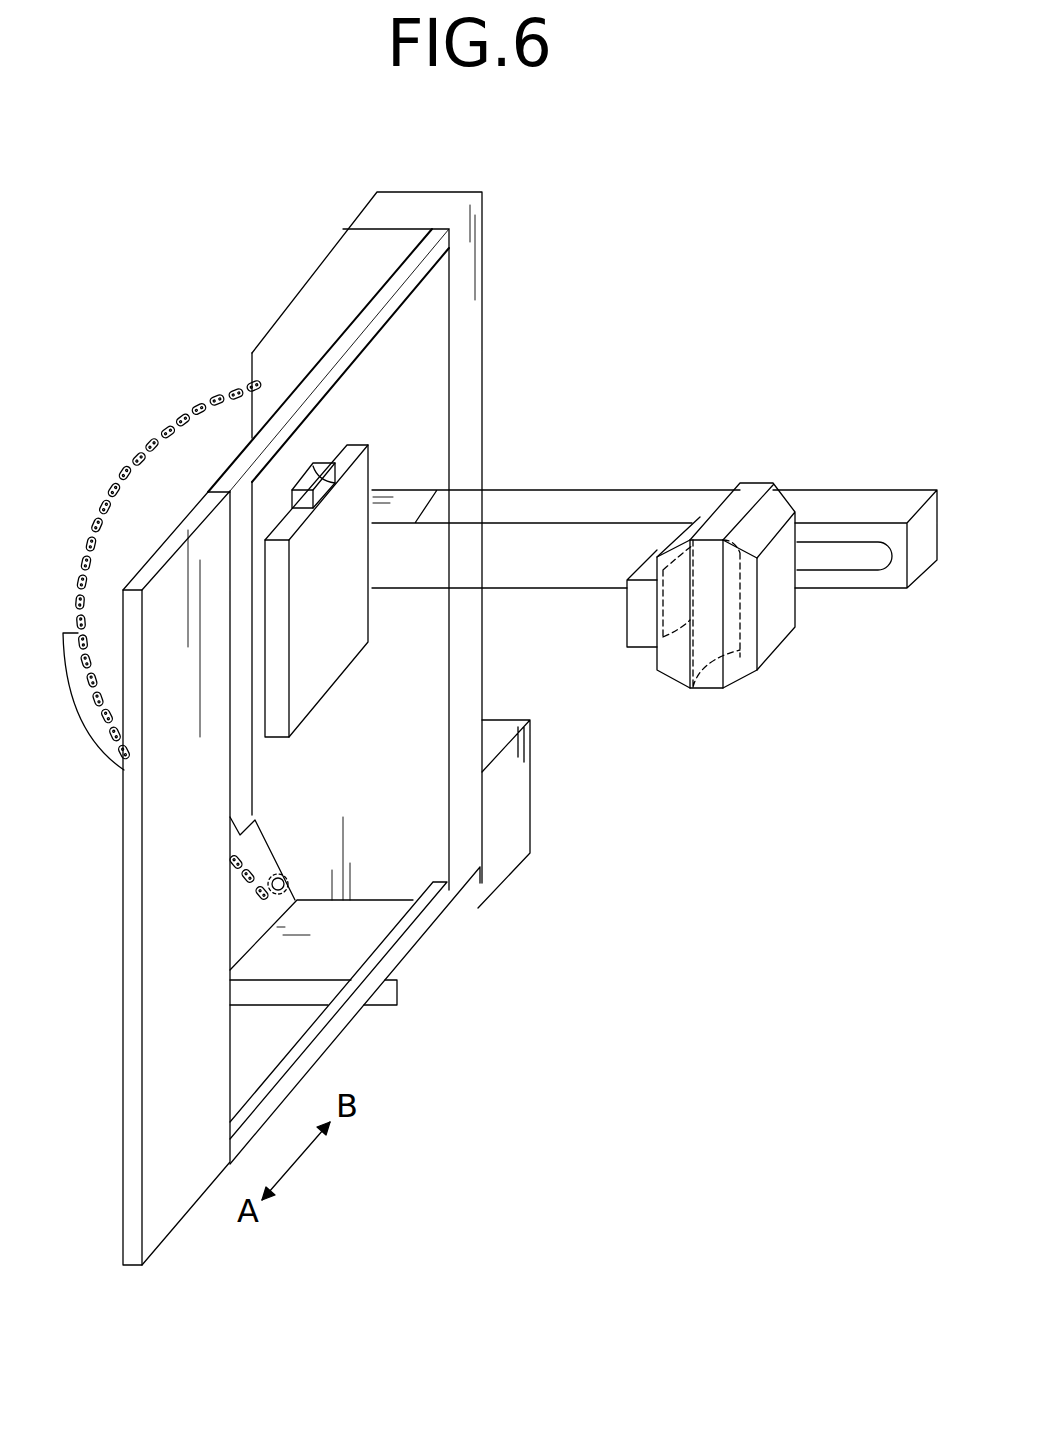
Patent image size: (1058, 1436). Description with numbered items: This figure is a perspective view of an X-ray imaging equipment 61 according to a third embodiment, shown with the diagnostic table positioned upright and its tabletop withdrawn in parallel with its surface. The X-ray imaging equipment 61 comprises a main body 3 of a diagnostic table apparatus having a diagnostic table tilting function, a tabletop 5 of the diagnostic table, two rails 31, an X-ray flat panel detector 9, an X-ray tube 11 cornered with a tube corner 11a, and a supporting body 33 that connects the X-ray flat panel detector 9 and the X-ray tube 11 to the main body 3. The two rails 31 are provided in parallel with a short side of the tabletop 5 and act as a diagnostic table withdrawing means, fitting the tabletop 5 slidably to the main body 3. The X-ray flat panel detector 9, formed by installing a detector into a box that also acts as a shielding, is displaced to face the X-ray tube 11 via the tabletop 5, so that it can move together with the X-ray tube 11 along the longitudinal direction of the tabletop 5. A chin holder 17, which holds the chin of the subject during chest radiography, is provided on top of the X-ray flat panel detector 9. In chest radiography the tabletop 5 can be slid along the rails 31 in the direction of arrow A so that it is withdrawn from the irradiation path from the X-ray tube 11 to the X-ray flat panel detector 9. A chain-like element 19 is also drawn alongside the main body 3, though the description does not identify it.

The X-ray imaging equipment 61 is at (674, 198).
The main body of diagnostic table apparatus 3 is at (340, 258).
The tabletop of diagnostic table 5 is at (133, 1258).
The X-ray flat panel detector 9 is at (283, 528).
The chin holder 17 is at (318, 472).
The chain 19 is at (170, 453).
The rails 31 is at (410, 287).
The supporting body 33 is at (618, 488).
The X-ray tube 11 is at (700, 690).
The tube corner 11a is at (780, 647).